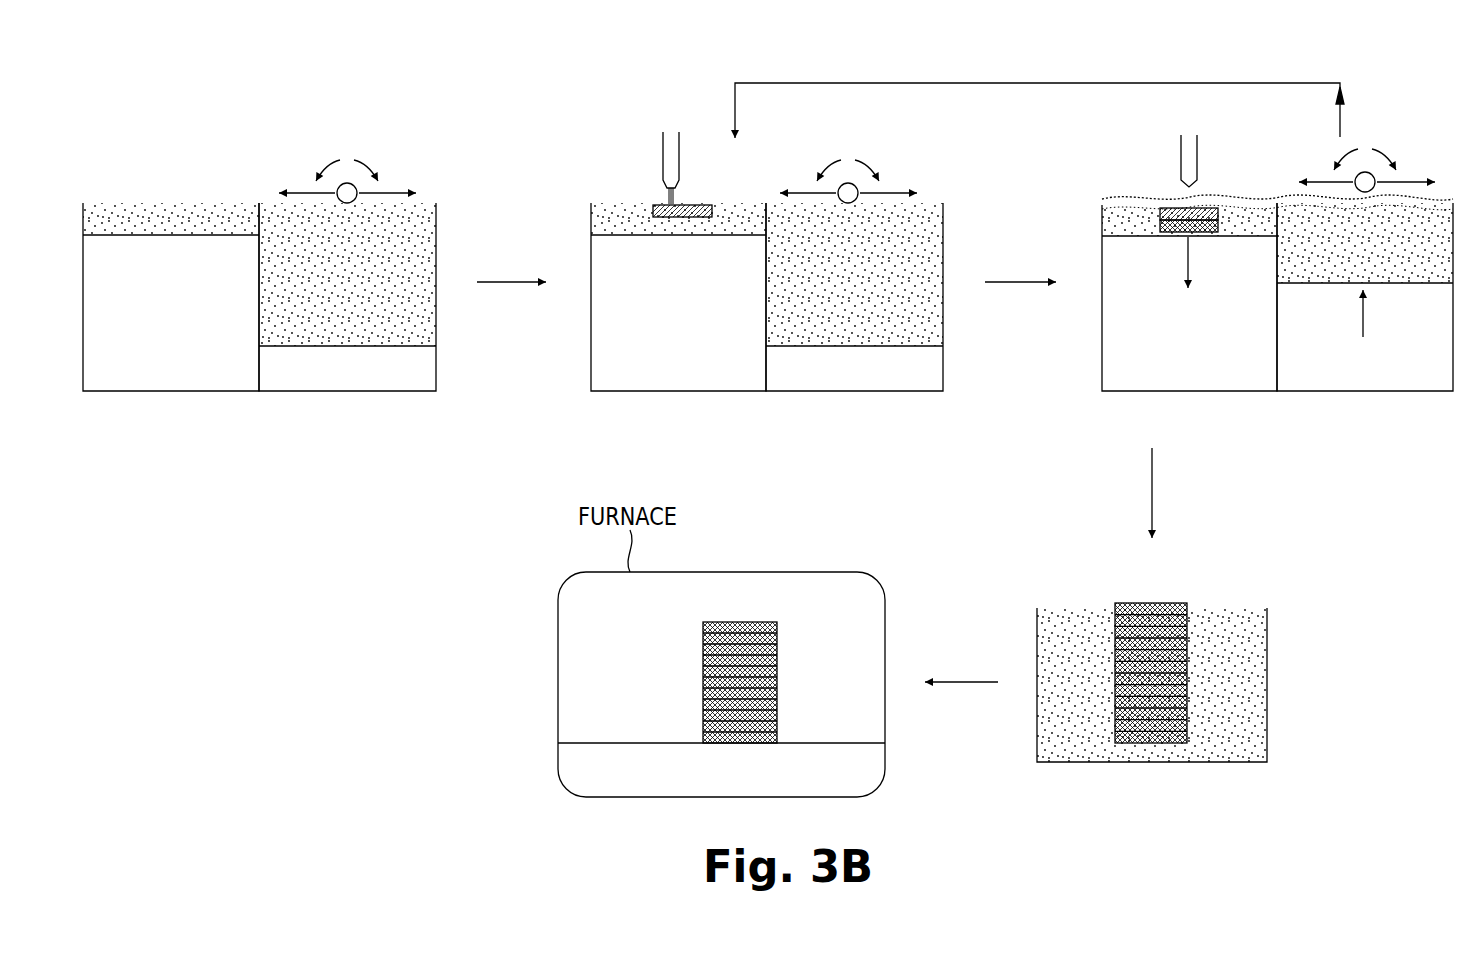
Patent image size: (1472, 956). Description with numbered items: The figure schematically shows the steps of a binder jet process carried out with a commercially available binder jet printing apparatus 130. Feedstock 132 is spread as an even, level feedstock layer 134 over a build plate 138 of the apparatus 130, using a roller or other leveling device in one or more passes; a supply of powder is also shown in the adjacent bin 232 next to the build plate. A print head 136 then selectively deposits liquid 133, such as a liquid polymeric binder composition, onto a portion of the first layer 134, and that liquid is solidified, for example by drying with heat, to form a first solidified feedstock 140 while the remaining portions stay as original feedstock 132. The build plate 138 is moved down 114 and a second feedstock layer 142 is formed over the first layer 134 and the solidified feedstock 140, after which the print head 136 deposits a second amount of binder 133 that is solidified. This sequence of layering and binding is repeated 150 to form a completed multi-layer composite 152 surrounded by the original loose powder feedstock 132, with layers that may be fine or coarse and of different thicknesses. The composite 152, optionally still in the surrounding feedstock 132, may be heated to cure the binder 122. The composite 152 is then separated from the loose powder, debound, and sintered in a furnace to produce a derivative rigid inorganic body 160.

The binder jet printing apparatus 130 is at (165, 117).
The feedstock 132 is at (111, 222).
The liquid 133 is at (681, 189).
The feedstock layer 134 is at (226, 222).
The print head 136 is at (663, 146).
The build plate 138 is at (150, 237).
The first solidified feedstock 140 is at (653, 205).
The second feedstock layer 142 is at (1102, 223).
The repeated sequence of steps 150 is at (1039, 97).
The moving down of build plate 114 is at (1219, 262).
The multi-layer composite 152 is at (1170, 630).
The heating to cure liquid polymeric binder 122 is at (1324, 775).
The rigid inorganic body 160 is at (776, 669).
The powder supply 232 is at (865, 296).